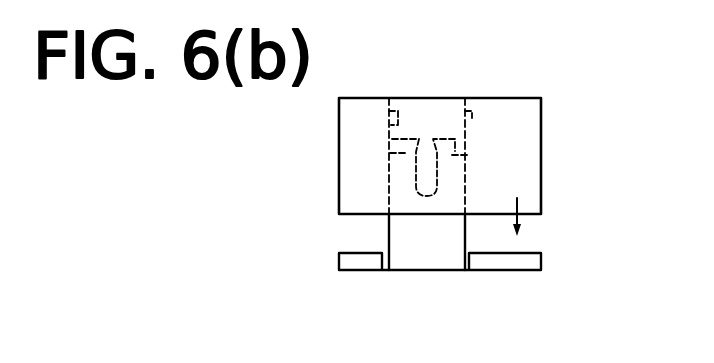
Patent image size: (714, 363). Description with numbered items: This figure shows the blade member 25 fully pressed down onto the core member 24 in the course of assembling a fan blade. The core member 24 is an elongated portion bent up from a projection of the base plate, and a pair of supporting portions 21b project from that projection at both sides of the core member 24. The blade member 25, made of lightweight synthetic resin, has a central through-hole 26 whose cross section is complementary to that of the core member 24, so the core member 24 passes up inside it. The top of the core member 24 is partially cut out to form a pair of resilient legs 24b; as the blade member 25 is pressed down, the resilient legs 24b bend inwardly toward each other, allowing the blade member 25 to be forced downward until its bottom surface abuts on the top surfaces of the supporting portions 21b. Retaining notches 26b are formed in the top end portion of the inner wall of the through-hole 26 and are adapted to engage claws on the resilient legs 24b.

The blade member 25 is at (510, 178).
The core member 24 is at (433, 258).
The supporting portions 21b is at (360, 260).
The through-hole 26 is at (389, 112).
The retaining notches 26b is at (472, 117).
The resilient legs 24b is at (390, 153).